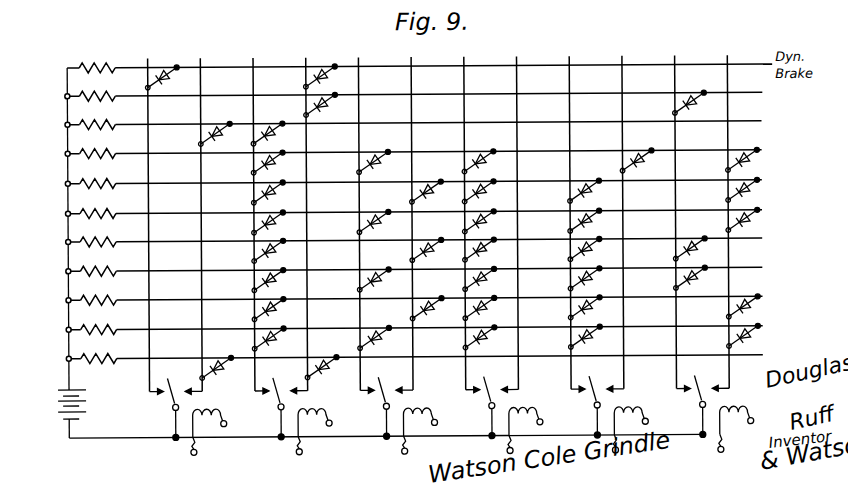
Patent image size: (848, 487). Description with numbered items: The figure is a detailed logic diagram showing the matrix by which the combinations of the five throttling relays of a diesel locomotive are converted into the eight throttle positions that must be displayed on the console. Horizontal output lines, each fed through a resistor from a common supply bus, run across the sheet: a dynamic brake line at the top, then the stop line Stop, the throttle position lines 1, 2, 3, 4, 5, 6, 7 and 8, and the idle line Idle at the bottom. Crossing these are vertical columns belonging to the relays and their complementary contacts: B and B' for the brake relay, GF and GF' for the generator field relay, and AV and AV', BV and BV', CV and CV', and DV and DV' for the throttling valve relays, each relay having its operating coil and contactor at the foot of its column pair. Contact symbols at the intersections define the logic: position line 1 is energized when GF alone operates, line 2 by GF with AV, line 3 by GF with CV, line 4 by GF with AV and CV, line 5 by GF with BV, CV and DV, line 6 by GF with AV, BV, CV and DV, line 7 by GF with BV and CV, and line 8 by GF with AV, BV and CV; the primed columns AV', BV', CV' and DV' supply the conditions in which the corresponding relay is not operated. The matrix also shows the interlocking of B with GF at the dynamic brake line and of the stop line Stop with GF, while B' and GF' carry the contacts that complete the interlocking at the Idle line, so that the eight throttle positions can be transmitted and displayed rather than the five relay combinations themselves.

The brake relay B is at (185, 257).
The brake relay auxiliary contact column B' is at (208, 218).
The generator field relay GF is at (288, 257).
The generator field relay auxiliary contact column GF' is at (314, 218).
The throttling valve relay AV is at (393, 256).
The throttling valve relay AV auxiliary contact column AV' is at (419, 217).
The throttling valve relay BV is at (499, 255).
The throttling valve relay BV auxiliary contact column BV' is at (513, 216).
The throttling valve relay CV is at (604, 255).
The throttling valve relay CV auxiliary contact column CV' is at (630, 216).
The throttling valve relay DV is at (710, 254).
The throttling valve relay DV auxiliary contact column DV' is at (735, 215).
The stop line Stop is at (432, 95).
The throttle position one line 1 is at (421, 123).
The throttle position two line 2 is at (421, 152).
The throttle position three line 3 is at (421, 182).
The throttle position four line 4 is at (421, 212).
The throttle position five line 5 is at (422, 240).
The throttle position six line 6 is at (422, 269).
The throttle position seven line 7 is at (422, 298).
The throttle position eight line 8 is at (422, 328).
The idle line Idle is at (433, 357).